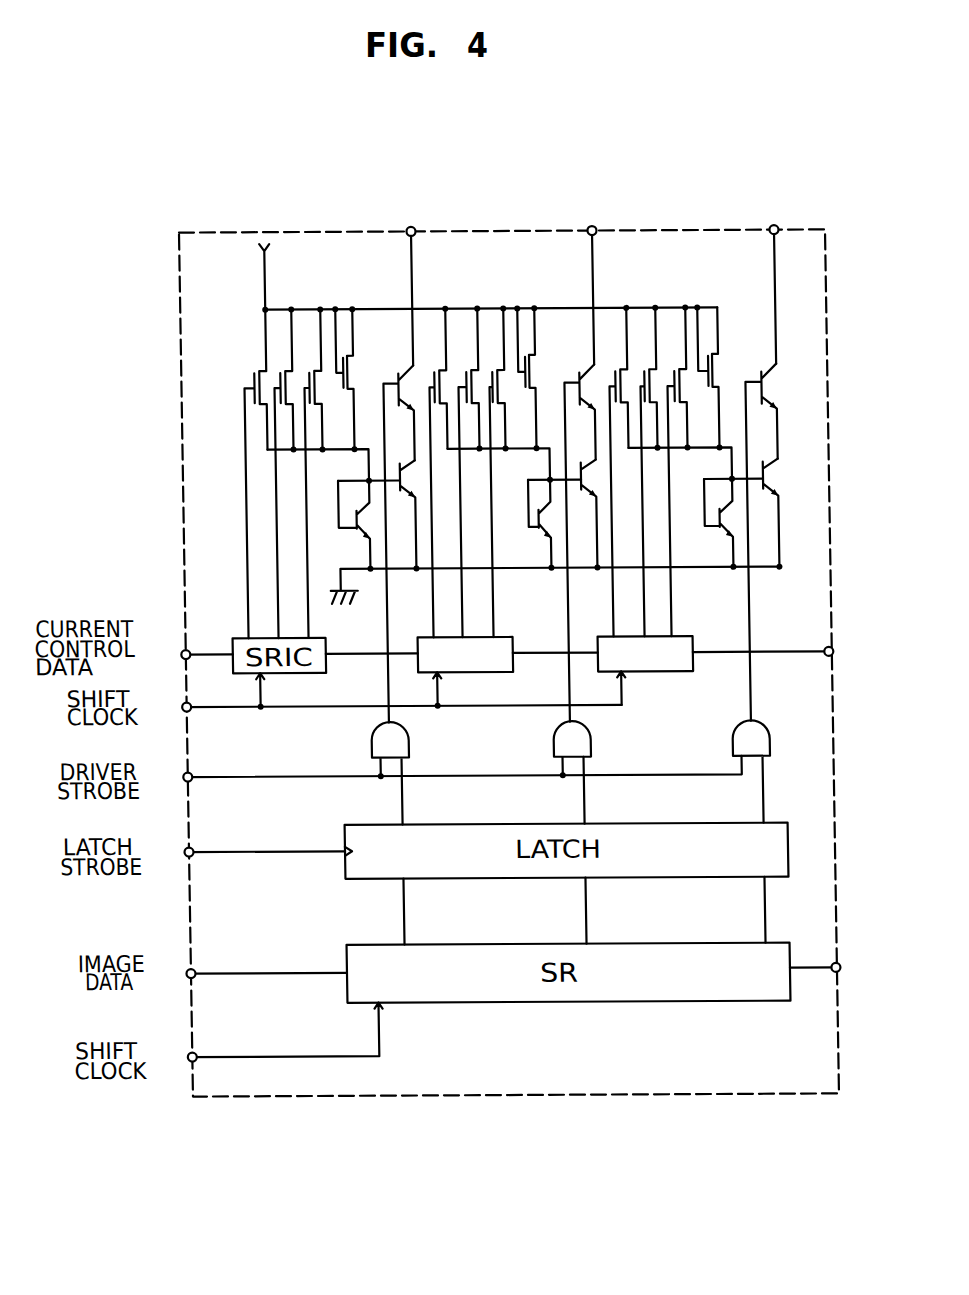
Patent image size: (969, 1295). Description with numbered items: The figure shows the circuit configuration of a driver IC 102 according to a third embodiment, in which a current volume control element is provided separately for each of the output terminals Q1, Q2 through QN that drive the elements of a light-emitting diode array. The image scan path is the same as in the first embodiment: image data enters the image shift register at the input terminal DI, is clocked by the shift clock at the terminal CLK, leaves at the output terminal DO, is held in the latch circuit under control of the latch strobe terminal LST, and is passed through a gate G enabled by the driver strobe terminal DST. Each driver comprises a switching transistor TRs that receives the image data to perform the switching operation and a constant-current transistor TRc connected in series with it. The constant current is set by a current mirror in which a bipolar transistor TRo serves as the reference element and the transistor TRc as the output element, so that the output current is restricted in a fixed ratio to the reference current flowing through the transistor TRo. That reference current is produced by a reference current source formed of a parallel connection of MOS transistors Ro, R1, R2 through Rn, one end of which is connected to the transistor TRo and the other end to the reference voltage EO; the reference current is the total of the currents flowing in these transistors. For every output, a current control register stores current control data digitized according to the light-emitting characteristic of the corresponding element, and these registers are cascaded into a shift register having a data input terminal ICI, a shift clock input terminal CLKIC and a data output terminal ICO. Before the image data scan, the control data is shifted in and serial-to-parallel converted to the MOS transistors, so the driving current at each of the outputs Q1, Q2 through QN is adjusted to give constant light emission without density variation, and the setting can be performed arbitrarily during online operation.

The driver IC 102 is at (646, 1095).
The output terminal Q1 is at (413, 226).
The output terminal Q2 is at (593, 226).
The output terminal QN is at (774, 226).
The reference voltage EO is at (245, 272).
The MOS transistor R1 is at (252, 372).
The MOS transistor R2 is at (280, 372).
The MOS transistor Rn is at (307, 372).
The MOS transistor Ro is at (346, 368).
The switching transistor TRs is at (396, 372).
The bipolar transistor TRo is at (351, 530).
The constant-current transistor TRc is at (396, 492).
The data input terminal ICI is at (179, 651).
The data output terminal ICO is at (822, 648).
The shift clock input terminal CLKIC is at (179, 709).
The input terminal DST is at (179, 780).
The gate G is at (363, 740).
The input terminal LST is at (180, 856).
The input terminal DI is at (181, 969).
The output terminal DO is at (824, 963).
The input terminal CLK is at (180, 1051).